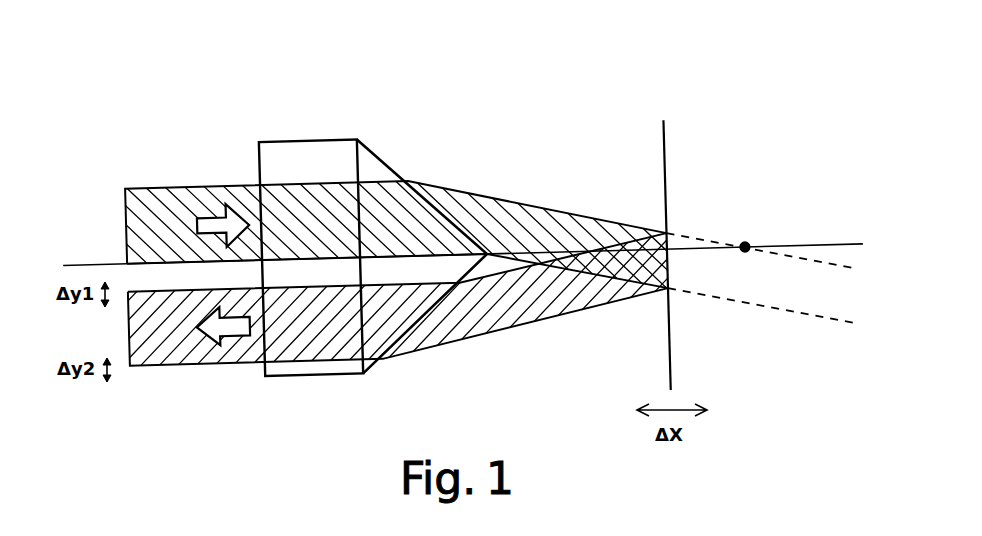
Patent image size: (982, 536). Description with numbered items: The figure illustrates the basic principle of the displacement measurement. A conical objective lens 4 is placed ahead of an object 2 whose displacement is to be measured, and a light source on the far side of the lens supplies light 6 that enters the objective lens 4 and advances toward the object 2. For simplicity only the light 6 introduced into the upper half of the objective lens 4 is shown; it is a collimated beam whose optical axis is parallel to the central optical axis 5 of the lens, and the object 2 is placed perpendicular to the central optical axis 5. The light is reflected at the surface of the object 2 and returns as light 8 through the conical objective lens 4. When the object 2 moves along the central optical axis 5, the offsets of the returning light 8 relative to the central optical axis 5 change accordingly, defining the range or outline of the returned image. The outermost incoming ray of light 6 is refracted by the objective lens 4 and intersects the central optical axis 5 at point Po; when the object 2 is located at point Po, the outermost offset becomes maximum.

The object 2 is at (665, 155).
The objective lens 4 is at (308, 150).
The central optical axis 5 is at (808, 246).
The light 6 is at (135, 229).
The light 8 is at (162, 343).
The point Po is at (745, 246).